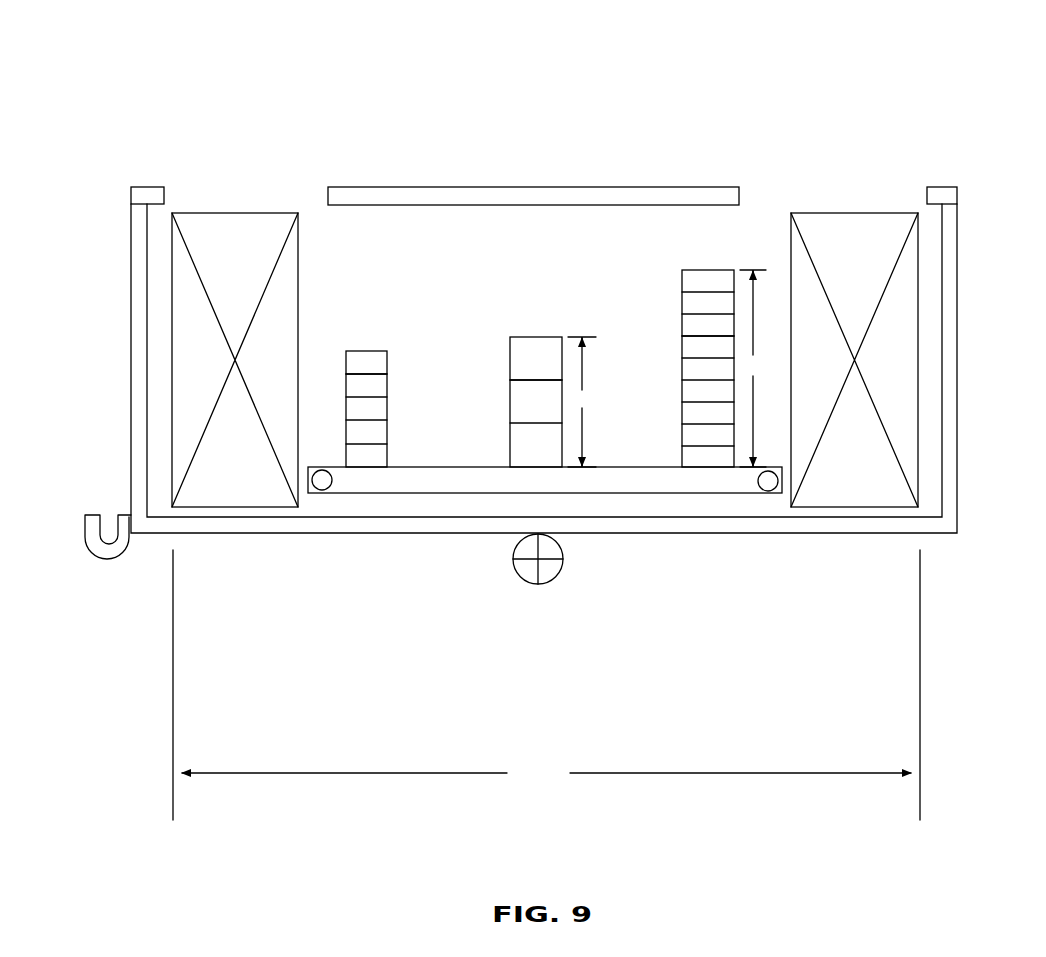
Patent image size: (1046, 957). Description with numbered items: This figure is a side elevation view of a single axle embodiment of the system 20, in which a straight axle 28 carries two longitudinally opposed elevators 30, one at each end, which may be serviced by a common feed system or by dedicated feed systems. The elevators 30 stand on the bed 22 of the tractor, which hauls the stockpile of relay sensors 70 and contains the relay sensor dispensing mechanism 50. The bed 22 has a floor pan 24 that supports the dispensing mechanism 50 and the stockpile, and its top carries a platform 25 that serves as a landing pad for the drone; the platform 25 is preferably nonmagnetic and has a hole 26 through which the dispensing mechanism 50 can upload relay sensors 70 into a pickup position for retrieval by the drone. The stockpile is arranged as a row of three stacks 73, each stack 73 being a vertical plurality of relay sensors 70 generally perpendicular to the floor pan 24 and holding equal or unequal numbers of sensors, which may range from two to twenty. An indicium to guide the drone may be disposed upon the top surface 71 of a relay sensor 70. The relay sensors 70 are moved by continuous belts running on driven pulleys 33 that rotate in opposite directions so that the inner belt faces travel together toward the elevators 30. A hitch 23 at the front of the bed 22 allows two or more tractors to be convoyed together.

The system 20 is at (490, 62).
The bed 22 is at (699, 657).
The hitch 23 is at (92, 557).
The floor pan 24 is at (220, 522).
The platform 25 is at (147, 196).
The hole 26 is at (314, 200).
The straight axle 28 is at (530, 572).
The elevator 30 is at (240, 230).
The driven pulley 33 is at (768, 492).
The relay sensor dispensing mechanism 50 is at (546, 685).
The relay sensor 70 is at (387, 433).
The top surface 71 is at (367, 351).
The stack 73 is at (323, 386).